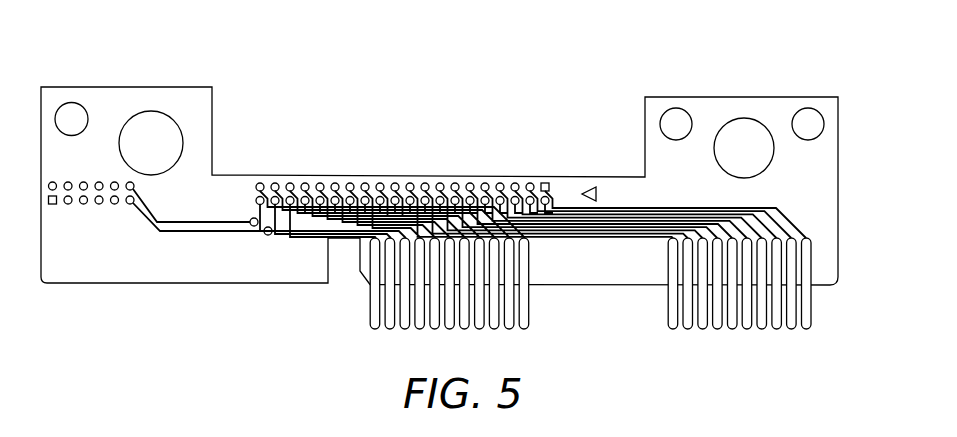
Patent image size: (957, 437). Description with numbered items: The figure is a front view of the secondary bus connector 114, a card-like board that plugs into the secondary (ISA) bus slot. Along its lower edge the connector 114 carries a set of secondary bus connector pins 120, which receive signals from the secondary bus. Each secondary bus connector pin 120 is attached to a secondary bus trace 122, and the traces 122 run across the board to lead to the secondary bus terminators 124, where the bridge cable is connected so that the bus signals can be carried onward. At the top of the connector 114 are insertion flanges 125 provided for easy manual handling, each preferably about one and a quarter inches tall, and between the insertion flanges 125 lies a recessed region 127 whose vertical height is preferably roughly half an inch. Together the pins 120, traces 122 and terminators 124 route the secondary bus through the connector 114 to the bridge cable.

The secondary bus connector 114 is at (113, 92).
The insertion flanges 125 is at (194, 93).
The recessed region 127 is at (497, 176).
The secondary bus terminator 124 is at (562, 176).
The secondary bus trace 122 is at (797, 220).
The secondary bus connector pins 120 is at (673, 332).